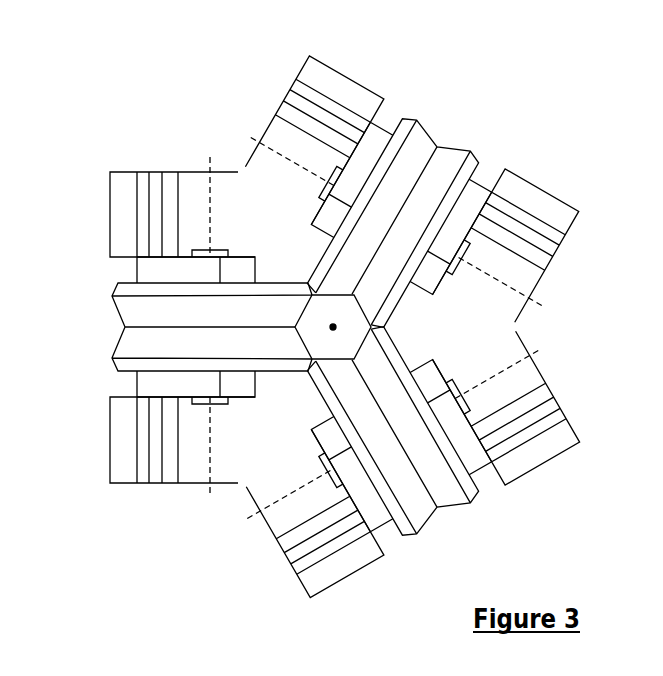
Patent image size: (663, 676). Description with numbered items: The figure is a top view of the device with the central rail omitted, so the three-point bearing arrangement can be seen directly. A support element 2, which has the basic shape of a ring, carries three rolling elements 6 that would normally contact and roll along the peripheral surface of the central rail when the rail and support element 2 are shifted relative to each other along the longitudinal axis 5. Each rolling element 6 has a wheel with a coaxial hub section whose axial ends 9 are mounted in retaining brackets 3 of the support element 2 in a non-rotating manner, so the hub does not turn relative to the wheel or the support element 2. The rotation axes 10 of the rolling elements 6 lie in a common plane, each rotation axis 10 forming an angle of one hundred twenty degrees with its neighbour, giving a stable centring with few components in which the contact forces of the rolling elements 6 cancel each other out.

The support element 2 is at (253, 193).
The retaining brackets 3 is at (160, 270).
The longitudinal axis 5 is at (333, 327).
The rolling elements 6 is at (150, 345).
The axial ends 9 is at (207, 252).
The rotation axis 10 is at (207, 212).